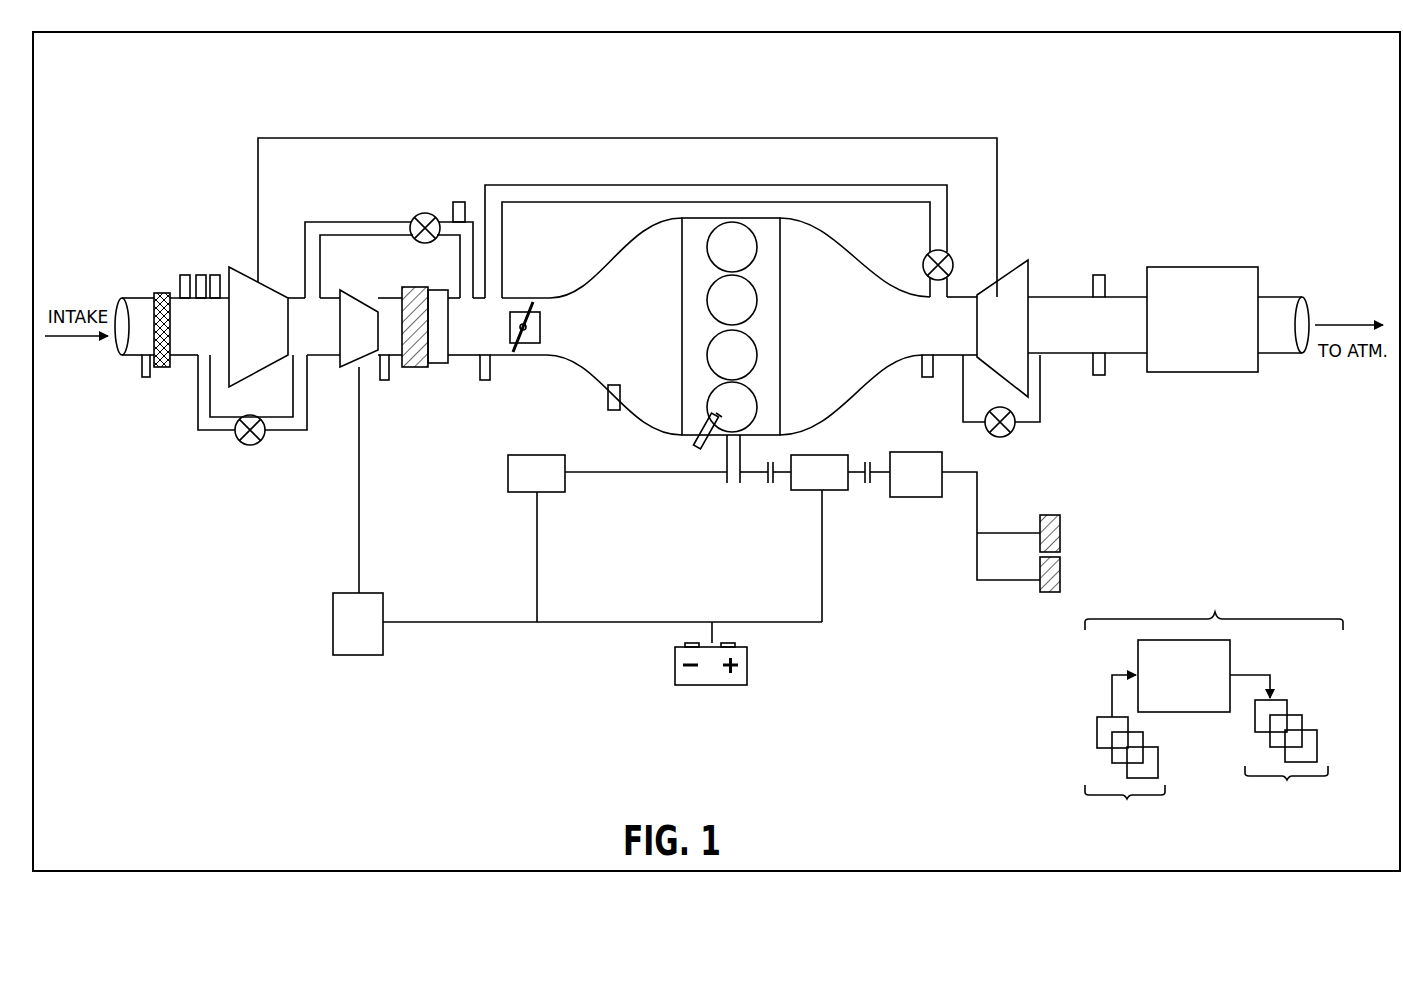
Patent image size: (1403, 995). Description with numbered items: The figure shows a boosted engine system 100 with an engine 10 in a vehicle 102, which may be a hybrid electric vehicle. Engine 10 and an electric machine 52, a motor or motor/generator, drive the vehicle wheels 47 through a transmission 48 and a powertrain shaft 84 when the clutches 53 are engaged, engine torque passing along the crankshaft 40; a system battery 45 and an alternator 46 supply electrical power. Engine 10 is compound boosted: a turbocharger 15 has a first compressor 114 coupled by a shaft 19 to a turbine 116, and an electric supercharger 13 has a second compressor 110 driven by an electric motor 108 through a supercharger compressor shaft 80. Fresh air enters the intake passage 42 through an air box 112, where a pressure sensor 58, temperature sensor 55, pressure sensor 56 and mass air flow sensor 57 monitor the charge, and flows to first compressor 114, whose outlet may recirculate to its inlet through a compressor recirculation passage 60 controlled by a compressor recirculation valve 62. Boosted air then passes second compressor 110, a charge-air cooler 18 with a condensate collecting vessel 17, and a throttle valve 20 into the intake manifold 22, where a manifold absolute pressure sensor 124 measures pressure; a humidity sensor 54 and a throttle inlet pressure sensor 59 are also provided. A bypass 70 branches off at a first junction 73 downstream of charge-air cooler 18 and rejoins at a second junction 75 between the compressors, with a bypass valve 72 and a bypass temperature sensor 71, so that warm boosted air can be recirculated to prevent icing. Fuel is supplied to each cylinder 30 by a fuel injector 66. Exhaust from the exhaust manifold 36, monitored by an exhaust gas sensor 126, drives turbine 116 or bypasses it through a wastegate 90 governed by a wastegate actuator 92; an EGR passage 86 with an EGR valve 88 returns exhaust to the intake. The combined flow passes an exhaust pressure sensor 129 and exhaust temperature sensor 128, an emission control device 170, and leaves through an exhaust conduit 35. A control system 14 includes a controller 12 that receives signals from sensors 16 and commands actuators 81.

The vehicle 102 is at (1305, 33).
The boosted engine system 100 is at (1052, 183).
The turbocharger 15 is at (422, 126).
The shaft 19 is at (893, 138).
The engine 10 is at (783, 306).
The controller 12 is at (1184, 676).
The electric supercharger 13 is at (326, 550).
The control system 14 is at (1214, 598).
The sensors 16 is at (1125, 758).
The collecting vessel 17 is at (436, 364).
The charge-air cooler 18 is at (405, 287).
The throttle valve 20 is at (540, 336).
The intake manifold 22 is at (592, 326).
The cylinder 30 is at (753, 238).
The exhaust conduit 35 is at (1278, 297).
The exhaust manifold 36 is at (855, 326).
The crankshaft 40 is at (725, 482).
The intake passage 42 is at (140, 357).
The system battery 45 is at (712, 686).
The alternator 46 is at (508, 490).
The vehicle wheels 47 is at (1040, 521).
The transmission 48 is at (916, 474).
The electric machine 52 is at (808, 490).
The clutch 53 is at (768, 483).
The humidity sensor 54 is at (386, 380).
The compressor inlet temperature sensor 55 is at (201, 275).
The compressor inlet pressure sensor 56 is at (215, 275).
The mass air flow sensor 57 is at (185, 275).
The pressure sensor 58 is at (147, 378).
The throttle inlet pressure sensor 59 is at (486, 380).
The compressor recirculation passage 60 is at (198, 425).
The compressor recirculation valve 62 is at (239, 440).
The fuel injector 66 is at (692, 445).
The bypass 70 is at (346, 222).
The bypass temperature sensor 71 is at (457, 202).
The bypass valve 72 is at (425, 213).
The first junction 73 is at (462, 292).
The second junction 75 is at (313, 298).
The supercharger compressor shaft 80 is at (358, 555).
The actuators 81 is at (1279, 748).
The powertrain shaft 84 is at (950, 474).
The EGR passage 86 is at (633, 185).
The EGR valve 88 is at (950, 262).
The wastegate 90 is at (963, 400).
The wastegate actuator 92 is at (1005, 435).
The electric motor 108 is at (358, 624).
The second compressor 110 is at (352, 366).
The air box 112 is at (158, 293).
The first compressor 114 is at (258, 327).
The turbine 116 is at (1002, 328).
The manifold absolute pressure sensor 124 is at (610, 392).
The exhaust gas sensor 126 is at (920, 376).
The exhaust temperature sensor 128 is at (1100, 375).
The exhaust pressure sensor 129 is at (1100, 275).
The emission control device 170 is at (1192, 267).